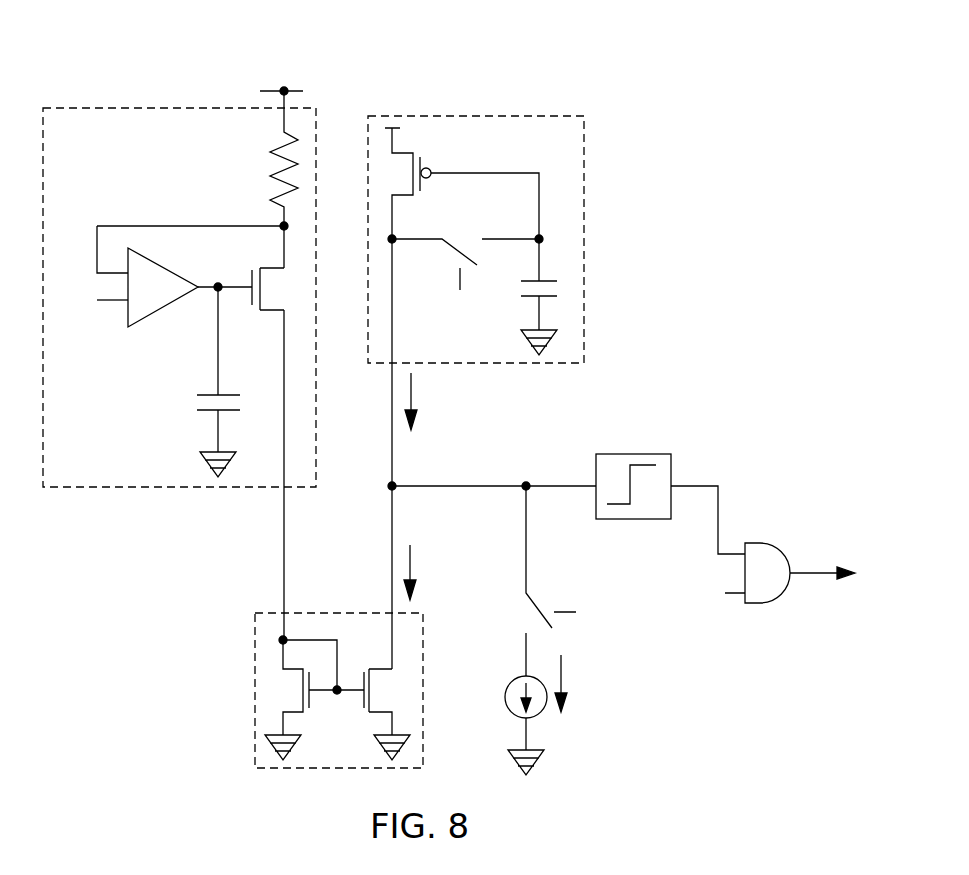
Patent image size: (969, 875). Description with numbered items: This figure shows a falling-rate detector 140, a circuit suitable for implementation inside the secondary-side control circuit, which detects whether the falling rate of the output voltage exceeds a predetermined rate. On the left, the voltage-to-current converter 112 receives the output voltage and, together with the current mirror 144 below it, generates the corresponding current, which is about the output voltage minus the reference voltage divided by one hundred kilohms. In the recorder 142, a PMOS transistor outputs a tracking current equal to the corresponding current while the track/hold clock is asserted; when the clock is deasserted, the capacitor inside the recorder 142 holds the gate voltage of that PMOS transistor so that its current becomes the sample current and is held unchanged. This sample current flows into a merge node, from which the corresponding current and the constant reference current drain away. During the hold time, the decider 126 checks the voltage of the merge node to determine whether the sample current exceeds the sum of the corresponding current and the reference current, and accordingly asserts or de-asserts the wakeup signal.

The voltage-to-current converter 112 is at (89, 138).
The falling-rate detector 140 is at (387, 76).
The recorder 142 is at (568, 116).
The current mirror 144 is at (262, 613).
The decider 126 is at (616, 454).